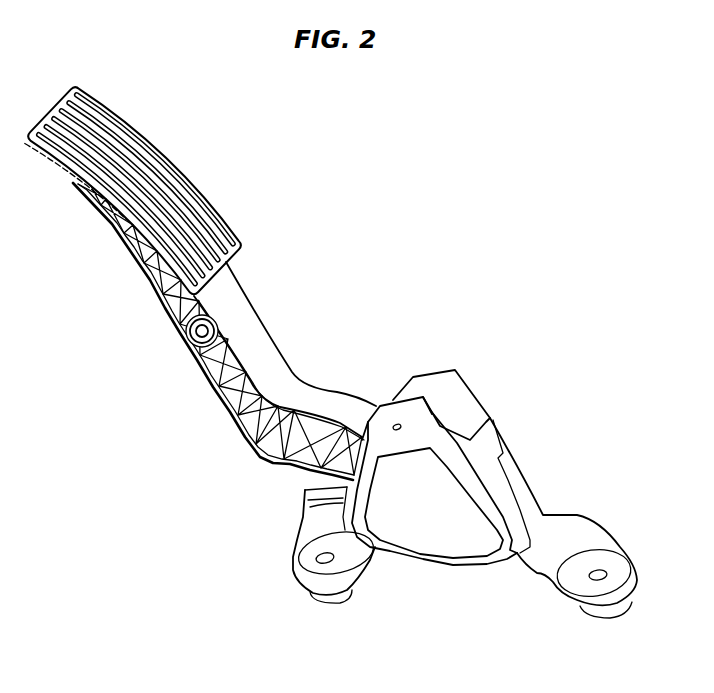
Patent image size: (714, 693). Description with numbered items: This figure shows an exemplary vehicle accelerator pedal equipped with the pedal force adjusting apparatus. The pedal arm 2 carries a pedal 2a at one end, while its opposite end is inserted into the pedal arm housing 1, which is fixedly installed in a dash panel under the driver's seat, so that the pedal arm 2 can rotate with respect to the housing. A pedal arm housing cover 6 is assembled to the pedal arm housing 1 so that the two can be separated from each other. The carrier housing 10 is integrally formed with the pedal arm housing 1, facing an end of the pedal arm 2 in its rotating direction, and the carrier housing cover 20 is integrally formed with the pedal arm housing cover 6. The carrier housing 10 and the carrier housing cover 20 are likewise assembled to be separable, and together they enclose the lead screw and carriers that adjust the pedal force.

The pedal arm housing 1 is at (520, 432).
The pedal arm 2 is at (267, 342).
The pedal 2a is at (160, 162).
The pedal arm housing cover 6 is at (438, 543).
The carrier housing 10 is at (463, 393).
The carrier housing cover 20 is at (317, 470).